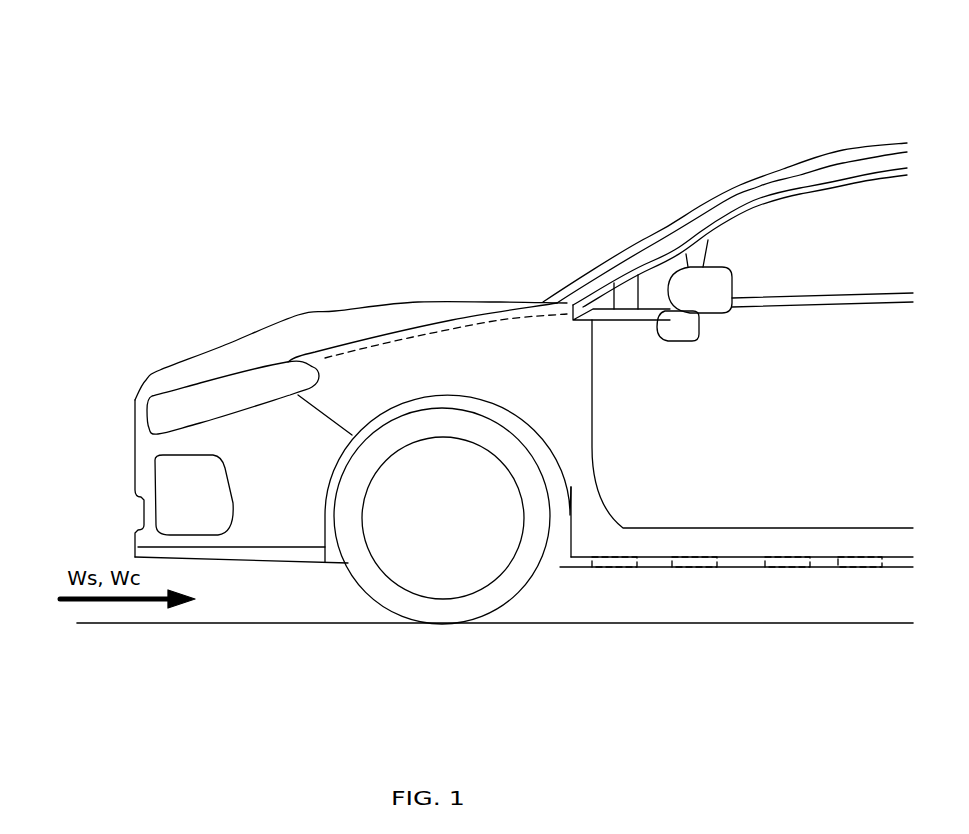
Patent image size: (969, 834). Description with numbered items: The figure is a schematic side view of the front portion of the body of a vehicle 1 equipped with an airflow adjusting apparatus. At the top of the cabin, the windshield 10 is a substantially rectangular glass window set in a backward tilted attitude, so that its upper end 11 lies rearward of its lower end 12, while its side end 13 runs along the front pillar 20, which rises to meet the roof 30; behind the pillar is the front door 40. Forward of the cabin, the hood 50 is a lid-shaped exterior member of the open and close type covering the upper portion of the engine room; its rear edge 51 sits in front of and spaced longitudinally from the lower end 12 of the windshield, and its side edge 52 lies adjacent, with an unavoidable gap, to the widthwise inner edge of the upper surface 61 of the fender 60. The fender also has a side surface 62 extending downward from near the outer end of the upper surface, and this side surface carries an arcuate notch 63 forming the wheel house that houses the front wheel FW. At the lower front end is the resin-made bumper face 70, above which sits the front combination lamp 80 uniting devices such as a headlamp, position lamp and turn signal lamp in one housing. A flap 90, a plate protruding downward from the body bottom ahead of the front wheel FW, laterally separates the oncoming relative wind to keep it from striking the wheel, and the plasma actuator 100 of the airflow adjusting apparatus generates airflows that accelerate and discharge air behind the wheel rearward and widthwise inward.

The vehicle 1 is at (248, 153).
The windshield 10 is at (697, 205).
The upper end 11 is at (783, 170).
The lower end 12 is at (527, 302).
The side end 13 is at (723, 202).
The front pillar 20 is at (675, 237).
The roof 30 is at (842, 150).
The front door 40 is at (803, 423).
The hood 50 is at (335, 312).
The rear edge 51 is at (502, 300).
The side edge 52 is at (315, 352).
The fender 60 is at (420, 376).
The upper surface 61 is at (452, 320).
The side surface 62 is at (538, 386).
The arcuate notch 63 is at (447, 399).
The bumper face 70 is at (248, 527).
The front combination lamp 80 is at (185, 389).
The flap 90 is at (320, 582).
The plasma actuator 100 is at (688, 565).
The front wheel FW is at (403, 613).